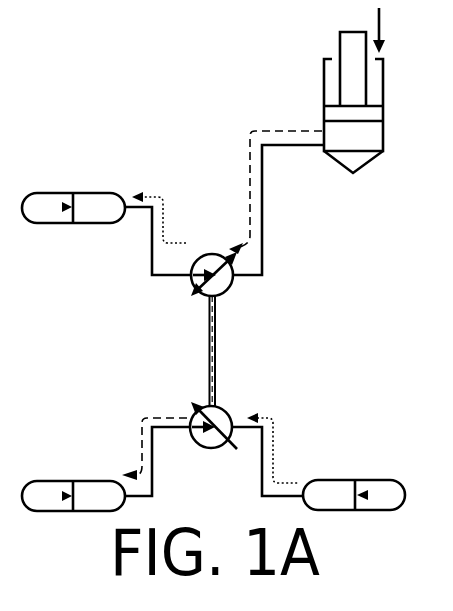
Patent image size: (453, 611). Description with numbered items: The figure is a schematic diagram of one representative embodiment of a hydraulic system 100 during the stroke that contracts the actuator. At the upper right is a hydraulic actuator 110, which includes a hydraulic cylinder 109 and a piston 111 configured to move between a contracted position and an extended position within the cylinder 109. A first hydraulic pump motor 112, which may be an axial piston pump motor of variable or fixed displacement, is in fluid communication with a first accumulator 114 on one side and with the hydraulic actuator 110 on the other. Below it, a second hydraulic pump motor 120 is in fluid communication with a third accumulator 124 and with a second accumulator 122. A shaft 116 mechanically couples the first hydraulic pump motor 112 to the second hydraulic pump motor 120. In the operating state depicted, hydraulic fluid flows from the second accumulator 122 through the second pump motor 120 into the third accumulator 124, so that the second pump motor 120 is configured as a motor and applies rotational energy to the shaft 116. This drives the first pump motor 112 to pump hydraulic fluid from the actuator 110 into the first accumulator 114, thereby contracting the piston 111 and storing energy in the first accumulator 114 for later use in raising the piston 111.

The hydraulic system 100 is at (87, 81).
The hydraulic cylinder 109 is at (323, 124).
The hydraulic actuator 110 is at (413, 133).
The piston 111 is at (340, 42).
The first hydraulic pump motor 112 is at (227, 290).
The first accumulator 114 is at (57, 224).
The shaft 116 is at (209, 349).
The second hydraulic pump motor 120 is at (222, 408).
The second accumulator 122 is at (350, 462).
The third accumulator 124 is at (85, 480).